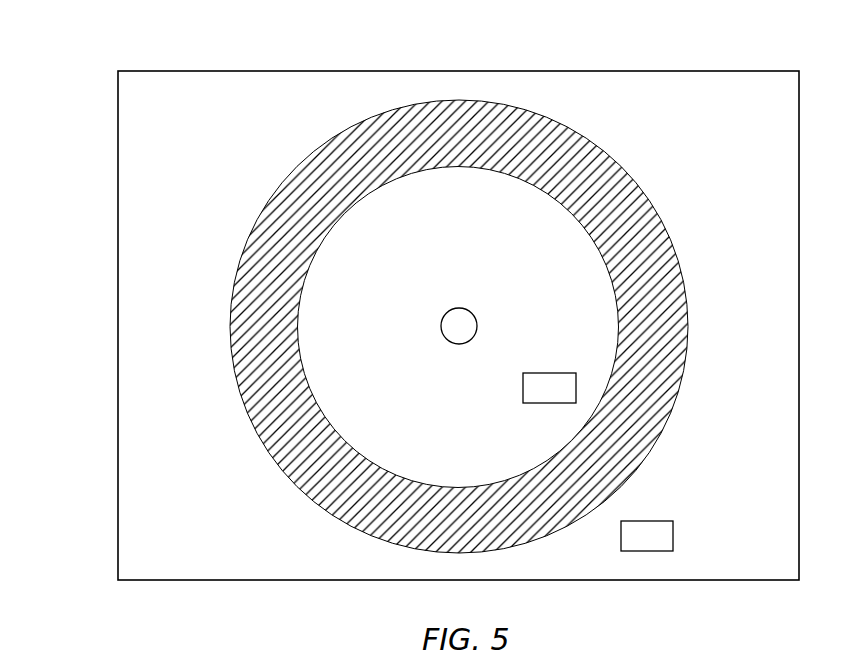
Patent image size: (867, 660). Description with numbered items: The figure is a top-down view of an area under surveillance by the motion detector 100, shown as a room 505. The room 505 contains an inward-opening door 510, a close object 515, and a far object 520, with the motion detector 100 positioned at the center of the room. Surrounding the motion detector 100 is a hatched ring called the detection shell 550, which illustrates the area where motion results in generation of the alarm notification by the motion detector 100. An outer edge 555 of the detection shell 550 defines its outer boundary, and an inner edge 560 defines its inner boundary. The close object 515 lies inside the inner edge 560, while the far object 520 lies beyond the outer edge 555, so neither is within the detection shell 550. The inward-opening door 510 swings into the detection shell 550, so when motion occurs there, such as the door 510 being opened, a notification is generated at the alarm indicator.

The room 505 is at (118, 458).
The inward-opening door 510 is at (517, 128).
The outer edge 555 is at (237, 280).
The inner edge 560 is at (312, 277).
The detection shell 550 is at (412, 284).
The motion detector 100 is at (442, 332).
The close object 515 is at (522, 390).
The far object 520 is at (675, 533).